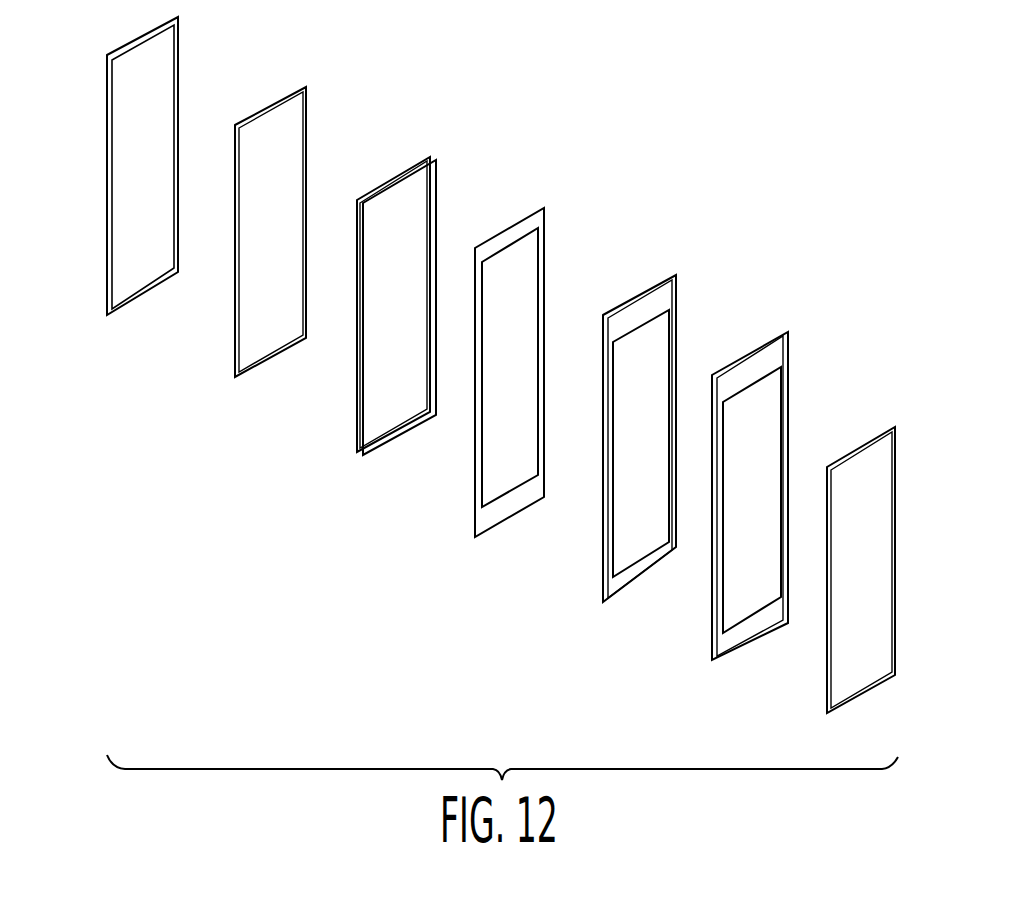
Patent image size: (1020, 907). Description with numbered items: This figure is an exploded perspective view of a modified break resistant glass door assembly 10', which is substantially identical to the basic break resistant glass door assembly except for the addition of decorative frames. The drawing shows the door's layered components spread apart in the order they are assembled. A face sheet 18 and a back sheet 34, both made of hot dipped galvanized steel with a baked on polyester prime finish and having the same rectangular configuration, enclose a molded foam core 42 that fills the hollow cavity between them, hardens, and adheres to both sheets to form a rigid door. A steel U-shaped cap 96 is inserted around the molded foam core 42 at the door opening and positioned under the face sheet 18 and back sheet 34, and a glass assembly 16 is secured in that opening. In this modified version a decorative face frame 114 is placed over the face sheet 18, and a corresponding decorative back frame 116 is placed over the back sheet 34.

The modified break resistant glass door assembly 10' is at (323, 630).
The outer cover plate 116 is at (133, 300).
The glass assembly 16 is at (253, 348).
The U-shaped cap 96 is at (354, 420).
The back sheet 34 is at (500, 512).
The molded foam core 42 is at (602, 565).
The face sheet 18 is at (710, 653).
The decorative face frame 114 is at (822, 678).